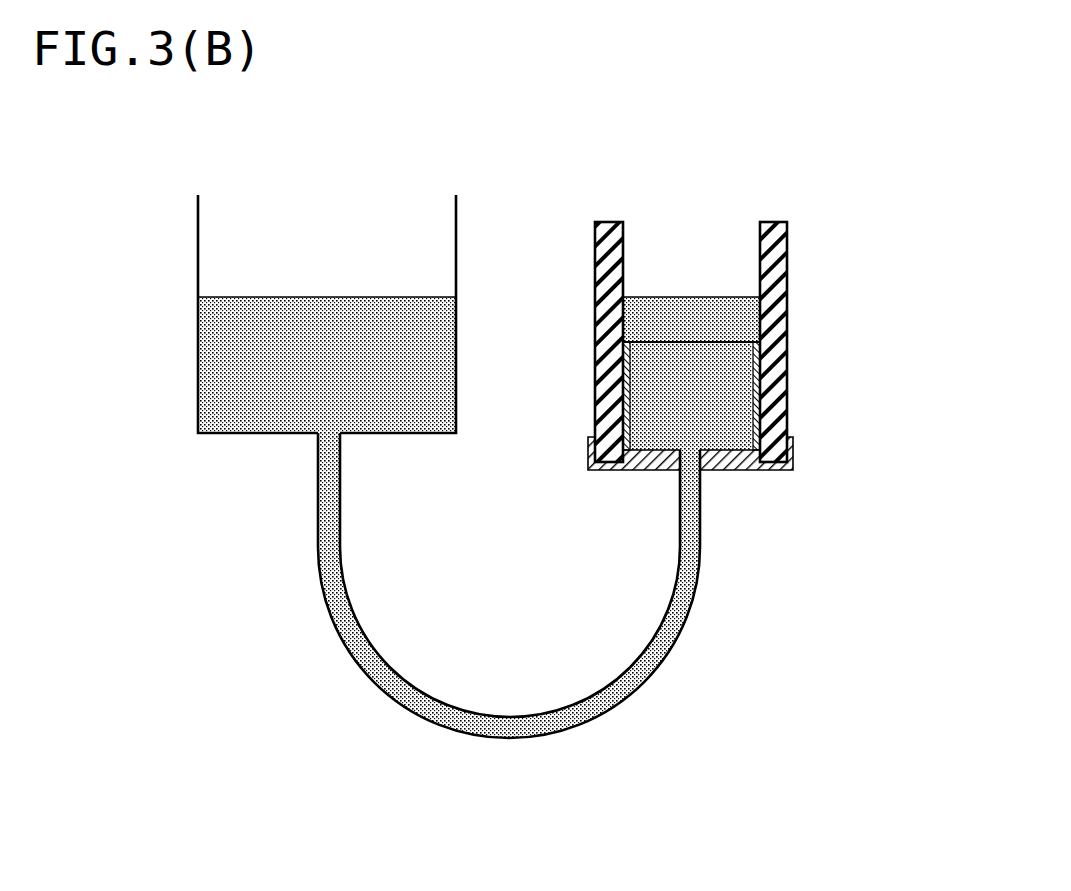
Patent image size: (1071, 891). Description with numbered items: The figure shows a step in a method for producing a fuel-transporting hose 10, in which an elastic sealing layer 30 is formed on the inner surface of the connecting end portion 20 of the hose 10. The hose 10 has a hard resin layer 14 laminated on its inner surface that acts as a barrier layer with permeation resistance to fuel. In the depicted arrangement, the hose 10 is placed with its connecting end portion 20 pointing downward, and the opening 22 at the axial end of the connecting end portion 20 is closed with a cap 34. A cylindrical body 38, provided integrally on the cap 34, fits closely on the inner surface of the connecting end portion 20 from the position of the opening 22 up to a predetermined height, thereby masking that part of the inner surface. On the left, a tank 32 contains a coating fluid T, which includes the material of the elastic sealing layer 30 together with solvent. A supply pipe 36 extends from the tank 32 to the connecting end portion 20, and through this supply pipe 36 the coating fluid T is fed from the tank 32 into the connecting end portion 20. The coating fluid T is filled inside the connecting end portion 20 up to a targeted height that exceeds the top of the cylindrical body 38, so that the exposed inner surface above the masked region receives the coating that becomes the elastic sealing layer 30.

The hose 10 is at (828, 277).
The resin layer 14 is at (738, 342).
The connecting end portion 20 is at (787, 357).
The opening 22 is at (745, 468).
The elastic sealing layer 30 is at (634, 320).
The tank 32 is at (198, 236).
The cap 34 is at (634, 468).
The supply pipe 36 is at (677, 618).
The cylindrical body 38 is at (626, 387).
The coating fluid T is at (222, 367).